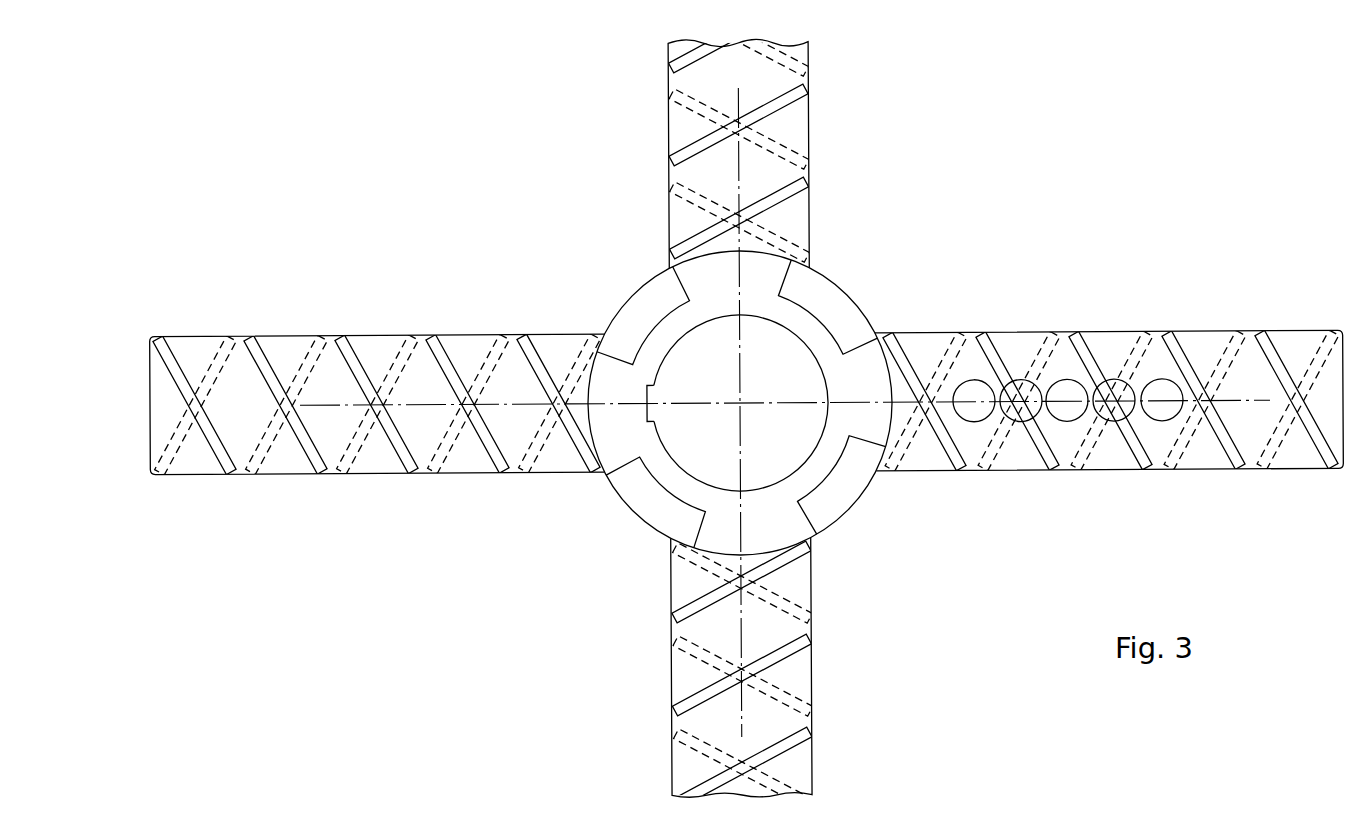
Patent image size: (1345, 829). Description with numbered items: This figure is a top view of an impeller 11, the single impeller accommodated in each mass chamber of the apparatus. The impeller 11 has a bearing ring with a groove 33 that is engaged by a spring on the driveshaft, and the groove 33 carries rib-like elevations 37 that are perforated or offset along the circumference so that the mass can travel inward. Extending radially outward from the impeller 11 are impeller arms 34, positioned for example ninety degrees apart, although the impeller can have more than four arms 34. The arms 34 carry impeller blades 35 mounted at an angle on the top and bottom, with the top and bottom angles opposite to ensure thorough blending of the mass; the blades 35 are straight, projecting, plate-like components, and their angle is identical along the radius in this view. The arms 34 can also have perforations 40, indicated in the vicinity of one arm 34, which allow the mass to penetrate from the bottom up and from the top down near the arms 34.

The impeller 11 is at (453, 500).
The groove 33 is at (652, 416).
The impeller arms 34 is at (1102, 467).
The impeller blades 35 is at (782, 197).
The rib-like elevations 37 is at (642, 305).
The perforations 40 is at (1022, 413).